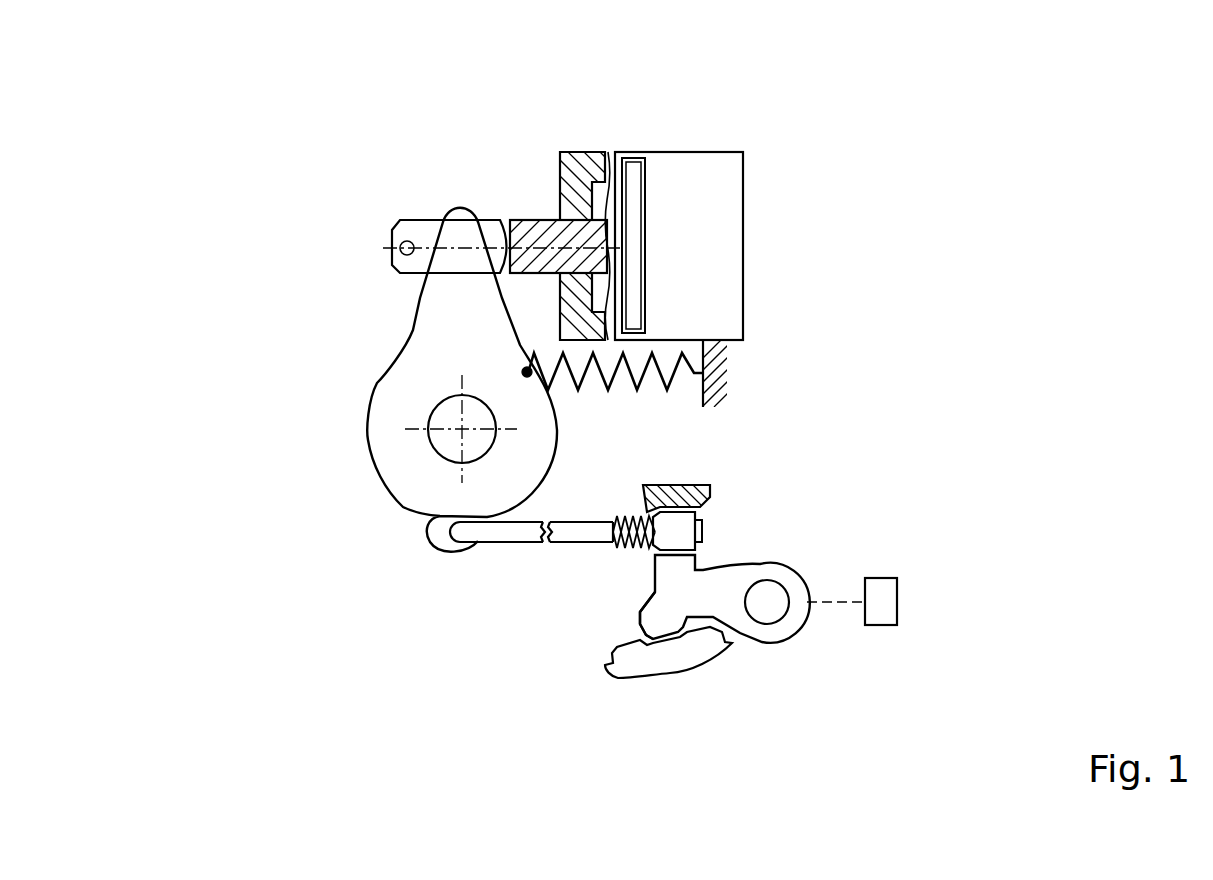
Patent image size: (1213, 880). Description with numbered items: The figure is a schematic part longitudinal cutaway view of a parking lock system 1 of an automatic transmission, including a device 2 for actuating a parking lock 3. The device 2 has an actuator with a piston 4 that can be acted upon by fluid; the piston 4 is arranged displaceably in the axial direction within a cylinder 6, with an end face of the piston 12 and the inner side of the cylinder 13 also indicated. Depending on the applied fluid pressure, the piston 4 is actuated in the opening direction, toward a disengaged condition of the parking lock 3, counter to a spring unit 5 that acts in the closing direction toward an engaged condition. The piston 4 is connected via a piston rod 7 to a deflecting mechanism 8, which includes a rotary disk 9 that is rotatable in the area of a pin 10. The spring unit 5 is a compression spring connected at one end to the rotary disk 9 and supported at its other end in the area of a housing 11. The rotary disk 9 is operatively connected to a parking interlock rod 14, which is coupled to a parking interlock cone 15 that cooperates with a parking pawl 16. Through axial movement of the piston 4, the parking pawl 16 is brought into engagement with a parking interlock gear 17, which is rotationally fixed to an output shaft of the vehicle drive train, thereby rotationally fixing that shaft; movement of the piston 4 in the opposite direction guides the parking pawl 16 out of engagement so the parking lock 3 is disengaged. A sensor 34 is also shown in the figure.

The parking lock system 1 is at (317, 167).
The device 2 is at (750, 183).
The parking lock 3 is at (829, 650).
The piston 4 is at (635, 180).
The spring unit 5 is at (613, 387).
The cylinder 6 is at (712, 152).
The piston rod 7 is at (525, 228).
The deflecting mechanism 8 is at (355, 380).
The rotary disk 9 is at (355, 380).
The pin 10 is at (430, 410).
The housing 11 is at (720, 365).
The end face of the piston 12 is at (608, 192).
The inner side of the cylinder 13 is at (570, 195).
The parking interlock rod 14 is at (517, 530).
The parking interlock cone 15 is at (685, 530).
The parking pawl 16 is at (655, 625).
The parking interlock gear 17 is at (675, 657).
The sensor 34 is at (882, 613).